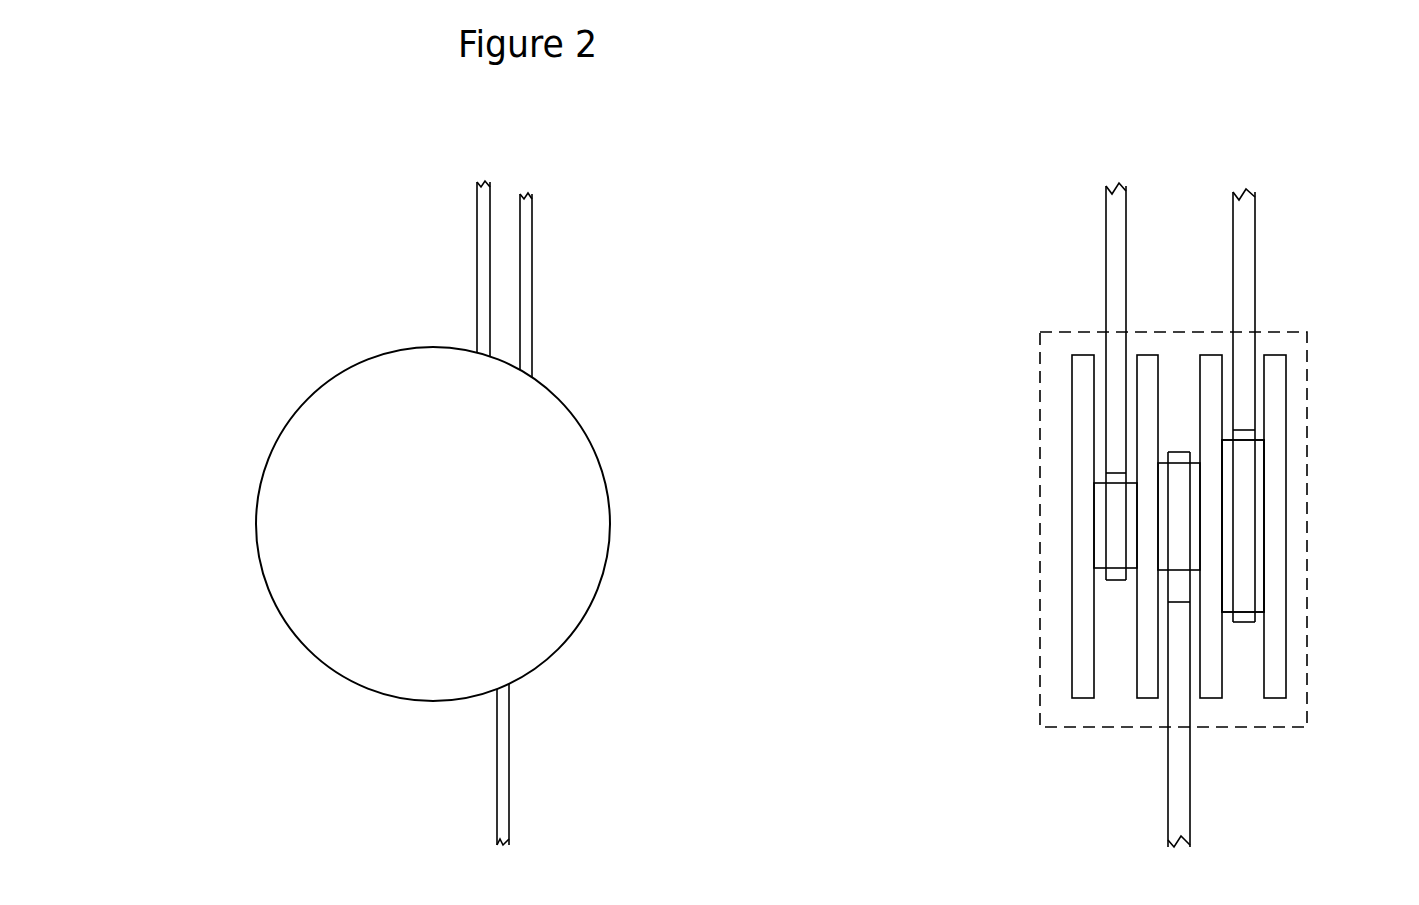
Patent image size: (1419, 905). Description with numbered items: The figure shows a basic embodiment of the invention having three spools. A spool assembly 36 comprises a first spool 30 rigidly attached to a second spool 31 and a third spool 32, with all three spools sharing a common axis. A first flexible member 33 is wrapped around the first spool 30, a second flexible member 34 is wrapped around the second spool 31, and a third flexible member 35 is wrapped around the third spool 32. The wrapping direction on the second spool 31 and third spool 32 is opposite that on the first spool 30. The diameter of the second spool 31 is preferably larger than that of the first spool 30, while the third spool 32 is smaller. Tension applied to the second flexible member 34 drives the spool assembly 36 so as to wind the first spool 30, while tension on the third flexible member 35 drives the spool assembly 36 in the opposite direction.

The first spool 30 is at (1193, 540).
The second spool 31 is at (1255, 540).
The third spool 32 is at (562, 552).
The first flexible member 33 is at (500, 760).
The second flexible member 34 is at (522, 295).
The third flexible member 35 is at (487, 277).
The spool assembly 36 is at (1257, 728).